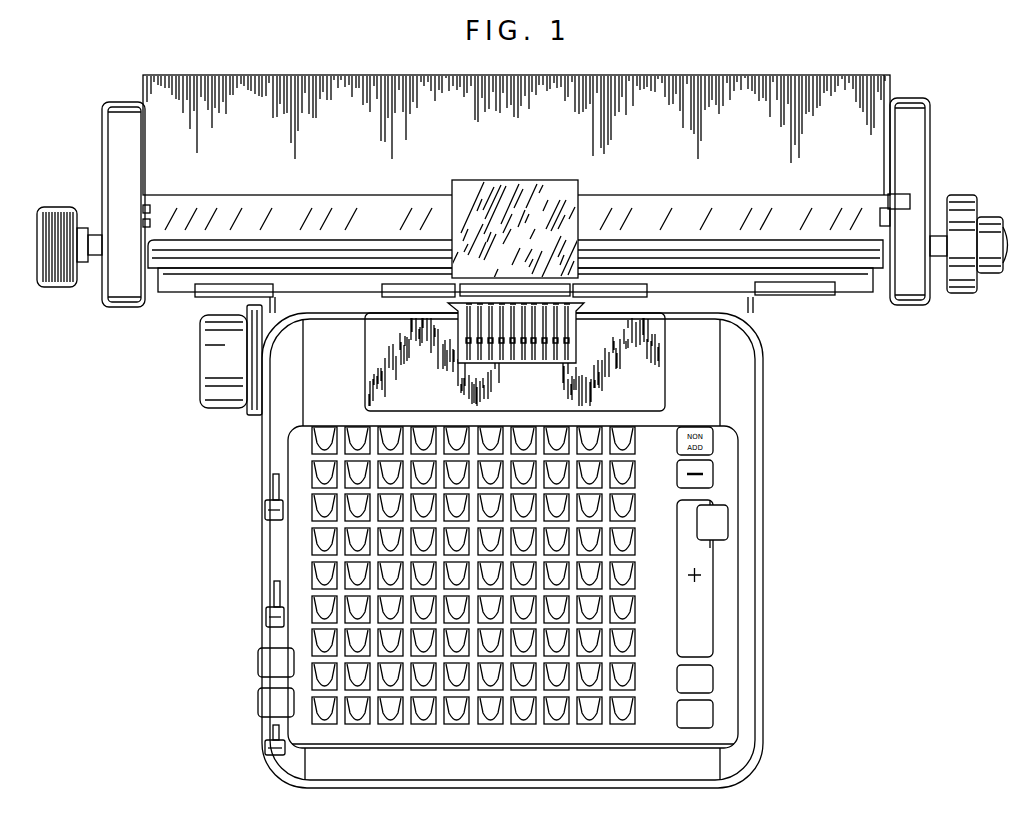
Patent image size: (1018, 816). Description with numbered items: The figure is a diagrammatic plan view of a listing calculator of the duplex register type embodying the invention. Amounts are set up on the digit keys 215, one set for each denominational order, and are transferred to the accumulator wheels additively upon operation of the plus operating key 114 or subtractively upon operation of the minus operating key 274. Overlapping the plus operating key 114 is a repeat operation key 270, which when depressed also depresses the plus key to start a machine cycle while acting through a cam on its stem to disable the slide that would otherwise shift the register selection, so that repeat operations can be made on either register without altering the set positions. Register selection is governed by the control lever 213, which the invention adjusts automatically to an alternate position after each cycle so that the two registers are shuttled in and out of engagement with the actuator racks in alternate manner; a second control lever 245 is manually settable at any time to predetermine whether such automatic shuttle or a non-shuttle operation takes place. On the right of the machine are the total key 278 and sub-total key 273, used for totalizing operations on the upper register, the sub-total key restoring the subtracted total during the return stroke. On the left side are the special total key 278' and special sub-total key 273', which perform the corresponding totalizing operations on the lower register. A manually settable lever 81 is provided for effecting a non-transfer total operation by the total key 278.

The digit keys 215 is at (393, 718).
The minus operating key 274 is at (708, 483).
The repeat operation key 270 is at (728, 527).
The plus operating key 114 is at (704, 603).
The sub-total key 273 is at (743, 679).
The total key 278 is at (743, 710).
The control lever 245 is at (265, 510).
The control lever 213 is at (267, 620).
The sub-total key 273' is at (245, 657).
The total key 278' is at (245, 702).
The manually settable lever 81 is at (265, 748).